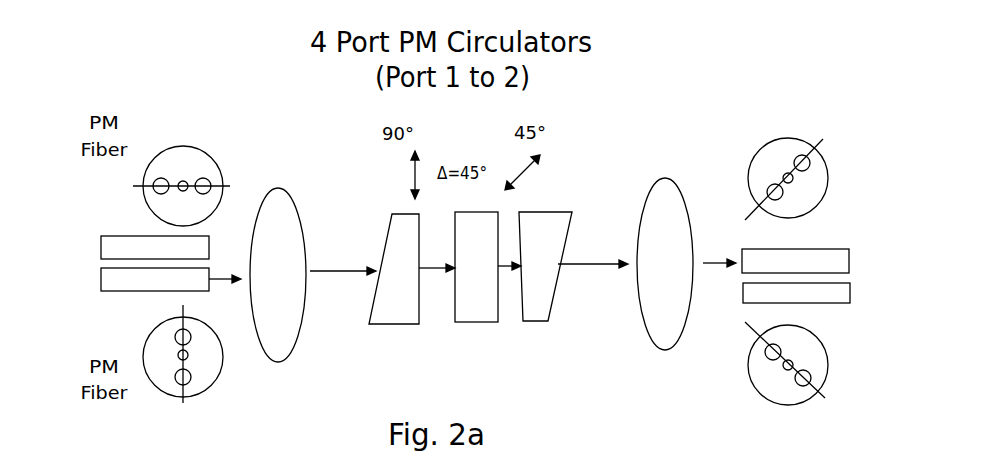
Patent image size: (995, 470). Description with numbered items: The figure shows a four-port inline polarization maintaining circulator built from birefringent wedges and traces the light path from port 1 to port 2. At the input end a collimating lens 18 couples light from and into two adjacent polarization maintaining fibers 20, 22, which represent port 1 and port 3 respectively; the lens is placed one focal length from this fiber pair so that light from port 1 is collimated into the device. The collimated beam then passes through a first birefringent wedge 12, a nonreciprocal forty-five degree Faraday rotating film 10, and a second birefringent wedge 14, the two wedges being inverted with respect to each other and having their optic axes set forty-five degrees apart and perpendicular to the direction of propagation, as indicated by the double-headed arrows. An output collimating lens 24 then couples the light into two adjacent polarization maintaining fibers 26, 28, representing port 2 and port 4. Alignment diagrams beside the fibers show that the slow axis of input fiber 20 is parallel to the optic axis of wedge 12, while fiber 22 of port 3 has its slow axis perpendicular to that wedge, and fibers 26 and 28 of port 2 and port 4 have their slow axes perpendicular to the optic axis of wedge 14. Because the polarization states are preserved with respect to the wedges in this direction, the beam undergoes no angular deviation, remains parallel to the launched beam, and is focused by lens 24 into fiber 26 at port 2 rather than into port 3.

The port 1 is at (160, 353).
The port 2 is at (796, 189).
The port 3 is at (162, 188).
The port 4 is at (797, 359).
The Faraday rotating film 10 is at (473, 313).
The first birefringent wedge 12 is at (384, 313).
The second birefringent wedge 14 is at (537, 318).
The collimating lens 18 is at (282, 347).
The input polarization maintaining fiber 20 is at (108, 282).
The polarization maintaining fiber 22 is at (106, 245).
The output collimating lens 24 is at (660, 338).
The output polarization maintaining fiber 26 is at (833, 258).
The polarization maintaining fiber 28 is at (838, 290).